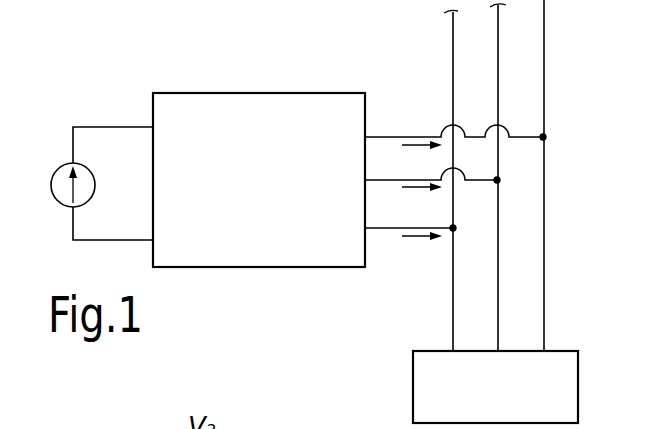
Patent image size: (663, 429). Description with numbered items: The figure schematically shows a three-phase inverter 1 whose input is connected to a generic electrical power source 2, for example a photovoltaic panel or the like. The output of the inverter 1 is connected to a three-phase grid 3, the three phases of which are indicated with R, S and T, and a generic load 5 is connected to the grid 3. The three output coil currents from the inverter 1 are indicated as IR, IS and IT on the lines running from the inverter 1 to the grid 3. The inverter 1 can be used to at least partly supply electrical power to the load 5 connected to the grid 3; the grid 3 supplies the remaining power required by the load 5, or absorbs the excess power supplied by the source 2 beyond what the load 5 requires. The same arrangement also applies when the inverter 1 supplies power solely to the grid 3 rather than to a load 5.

The three-phase inverter 1 is at (226, 258).
The electrical power source 2 is at (62, 207).
The three-phase grid 3 is at (555, 151).
The load 5 is at (412, 378).